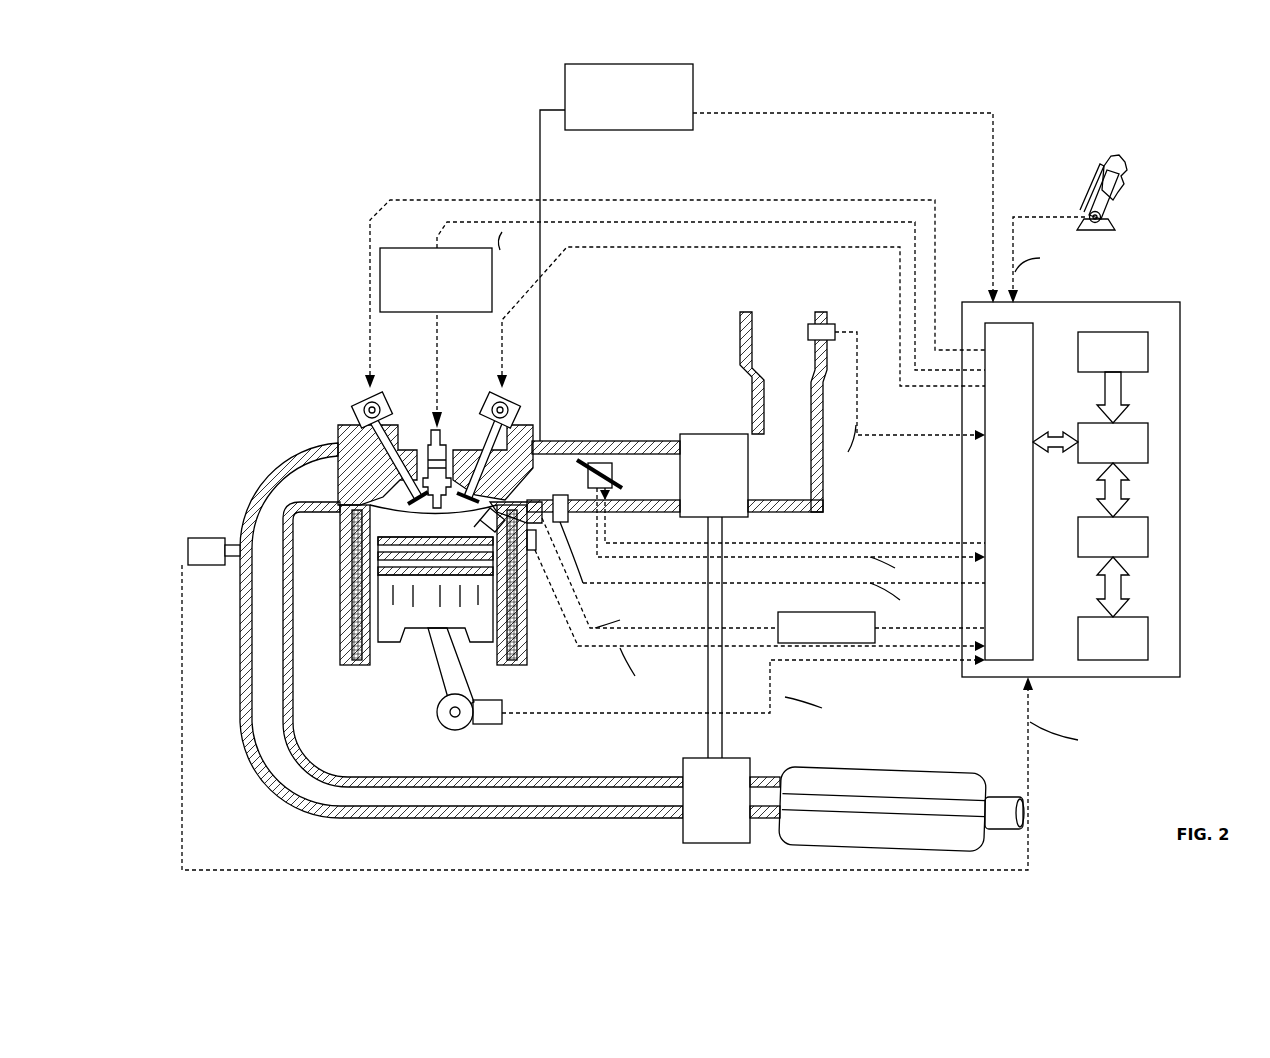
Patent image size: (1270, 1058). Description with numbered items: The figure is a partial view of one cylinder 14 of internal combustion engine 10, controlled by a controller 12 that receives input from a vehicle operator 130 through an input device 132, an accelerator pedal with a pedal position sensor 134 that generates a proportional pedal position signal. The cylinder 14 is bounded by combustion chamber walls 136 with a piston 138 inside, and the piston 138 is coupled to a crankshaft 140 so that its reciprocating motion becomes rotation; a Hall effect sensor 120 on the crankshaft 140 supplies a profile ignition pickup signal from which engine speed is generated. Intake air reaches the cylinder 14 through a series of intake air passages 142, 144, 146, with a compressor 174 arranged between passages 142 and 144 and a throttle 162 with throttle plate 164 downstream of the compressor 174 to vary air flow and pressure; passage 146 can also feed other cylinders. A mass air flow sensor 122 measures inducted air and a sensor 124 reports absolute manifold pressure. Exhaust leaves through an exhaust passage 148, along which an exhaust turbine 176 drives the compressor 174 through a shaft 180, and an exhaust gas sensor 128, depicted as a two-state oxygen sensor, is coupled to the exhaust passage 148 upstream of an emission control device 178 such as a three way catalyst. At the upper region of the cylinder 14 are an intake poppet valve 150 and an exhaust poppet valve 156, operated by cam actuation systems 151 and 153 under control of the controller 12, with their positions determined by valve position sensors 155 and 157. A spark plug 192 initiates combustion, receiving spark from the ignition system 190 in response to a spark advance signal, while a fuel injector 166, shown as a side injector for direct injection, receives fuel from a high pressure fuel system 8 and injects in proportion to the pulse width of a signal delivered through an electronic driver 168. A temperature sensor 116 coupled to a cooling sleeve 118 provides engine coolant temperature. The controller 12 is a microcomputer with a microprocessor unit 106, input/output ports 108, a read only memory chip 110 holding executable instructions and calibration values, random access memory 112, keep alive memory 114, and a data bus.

The internal combustion engine 10 is at (180, 145).
The high pressure fuel system 8 is at (695, 78).
The controller 12 is at (1172, 304).
The cylinder 14 is at (338, 538).
The microprocessor unit 106 is at (1150, 438).
The input/output ports 108 is at (1036, 330).
The read only memory chip 110 is at (1150, 348).
The random access memory 112 is at (1150, 533).
The keep alive memory 114 is at (1150, 635).
The temperature sensor 116 is at (532, 552).
The cooling sleeve 118 is at (530, 662).
The Hall effect sensor 120 is at (492, 724).
The mass air flow sensor 122 is at (835, 324).
The manifold pressure sensor 124 is at (590, 560).
The exhaust gas sensor 128 is at (188, 546).
The vehicle operator 130 is at (1128, 178).
The input device 132 is at (1083, 190).
The pedal position sensor 134 is at (1112, 222).
The combustion chamber walls 136 is at (370, 665).
The piston 138 is at (418, 620).
The crankshaft 140 is at (445, 728).
The intake air passage 142 is at (773, 356).
The intake air passage 144 is at (641, 483).
The intake air passage 146 is at (539, 488).
The exhaust passage 148 is at (297, 495).
The intake poppet valve 150 is at (457, 440).
The cam actuation system 151 is at (495, 400).
The cam actuation system 153 is at (378, 400).
The valve position sensor 155 is at (535, 425).
The exhaust poppet valve 156 is at (355, 445).
The valve position sensor 157 is at (358, 403).
The throttle 162 is at (605, 462).
The throttle plate 164 is at (577, 460).
The fuel injector 166 is at (495, 508).
The electronic driver 168 is at (780, 612).
The compressor 174 is at (712, 434).
The exhaust turbine 176 is at (683, 826).
The emission control device 178 is at (945, 776).
The shaft 180 is at (722, 728).
The ignition system 190 is at (400, 248).
The spark plug 192 is at (428, 440).